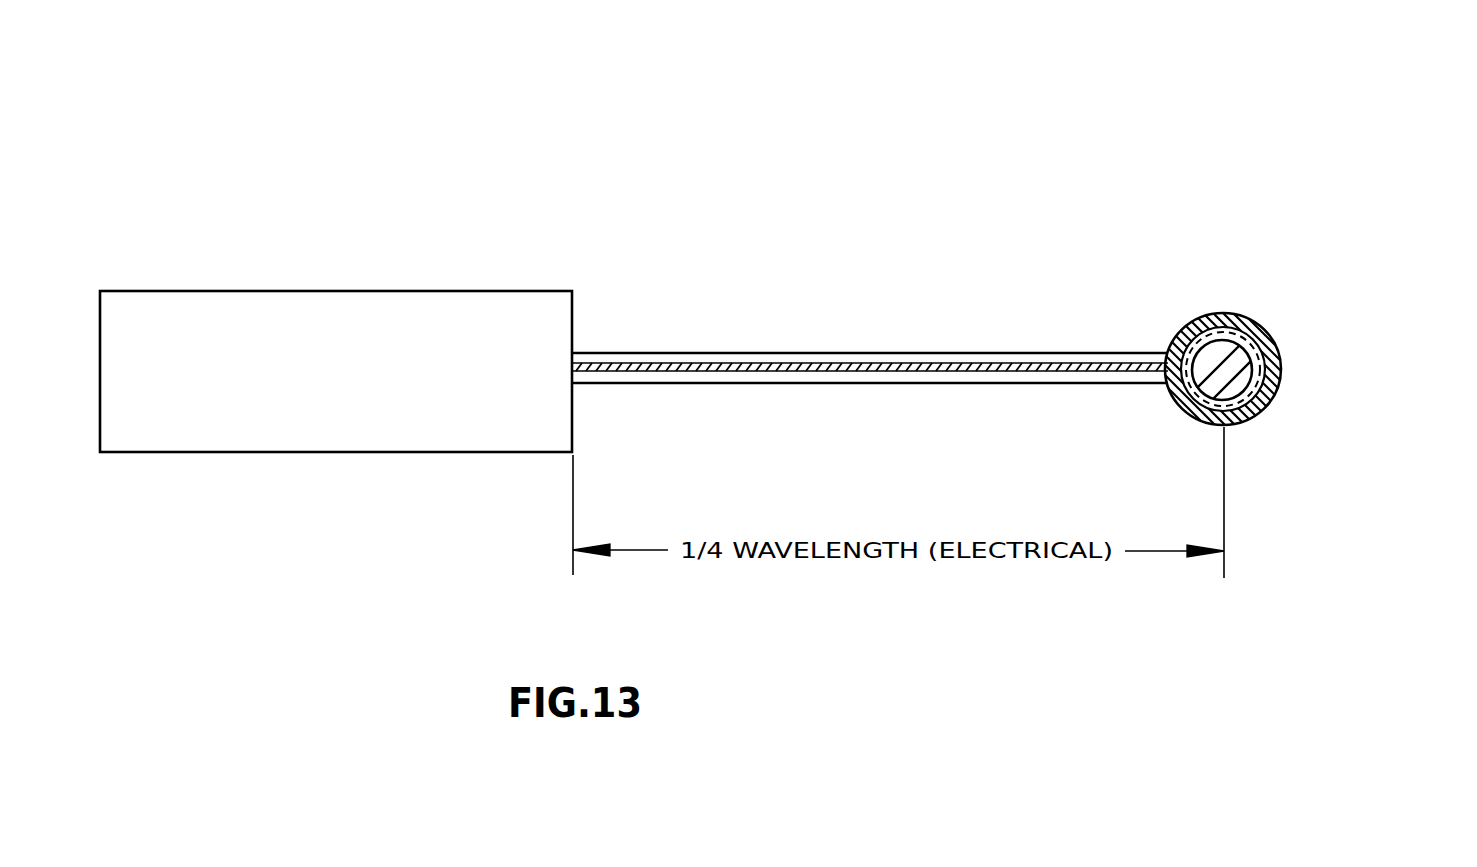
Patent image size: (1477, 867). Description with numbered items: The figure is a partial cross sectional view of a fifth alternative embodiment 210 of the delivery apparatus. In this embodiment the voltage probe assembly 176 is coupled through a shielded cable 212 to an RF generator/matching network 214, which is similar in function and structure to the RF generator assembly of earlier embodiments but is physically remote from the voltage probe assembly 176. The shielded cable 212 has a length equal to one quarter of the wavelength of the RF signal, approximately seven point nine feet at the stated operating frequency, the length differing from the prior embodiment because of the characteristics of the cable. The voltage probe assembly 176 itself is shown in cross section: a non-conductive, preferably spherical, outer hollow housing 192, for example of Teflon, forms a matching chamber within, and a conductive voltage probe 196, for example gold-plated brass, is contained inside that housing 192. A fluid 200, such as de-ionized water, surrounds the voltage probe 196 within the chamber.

The RF generator/matching network 214 is at (543, 297).
The shielded cable 212 is at (845, 353).
The outer hollow housing 192 is at (1272, 334).
The voltage probe 196 is at (1186, 336).
The fluid 200 is at (1217, 313).
The voltage probe assembly 176 is at (1325, 375).
The fifth alternative embodiment 210 is at (1213, 140).